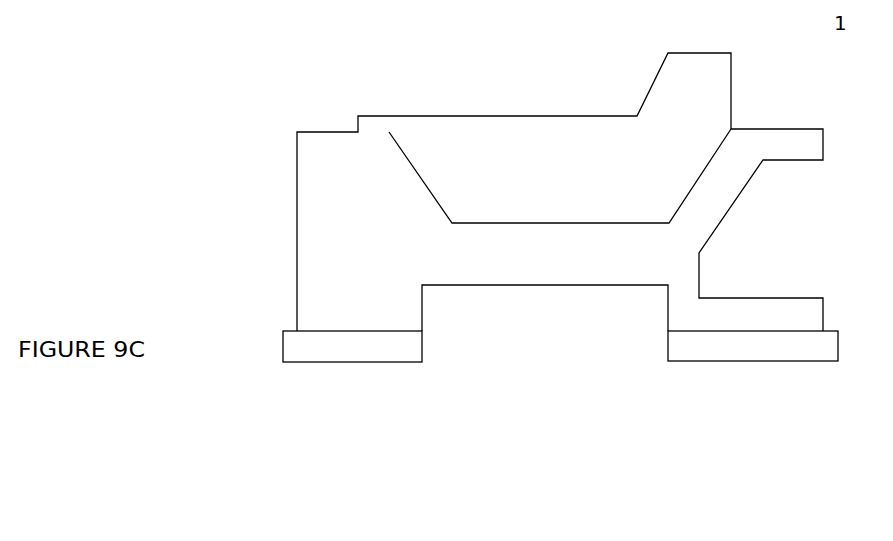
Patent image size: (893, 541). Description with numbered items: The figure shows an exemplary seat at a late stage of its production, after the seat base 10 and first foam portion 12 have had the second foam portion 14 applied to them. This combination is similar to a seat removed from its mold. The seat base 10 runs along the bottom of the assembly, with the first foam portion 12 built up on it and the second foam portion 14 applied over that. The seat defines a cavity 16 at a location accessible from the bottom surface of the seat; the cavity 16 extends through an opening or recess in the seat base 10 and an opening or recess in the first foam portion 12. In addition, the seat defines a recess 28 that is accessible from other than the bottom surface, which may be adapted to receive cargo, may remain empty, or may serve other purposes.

The seat base 10 is at (319, 376).
The first foam portion 12 is at (380, 349).
The second foam portion 14 is at (484, 242).
The cavity 16 is at (545, 308).
The recess 28 is at (761, 230).